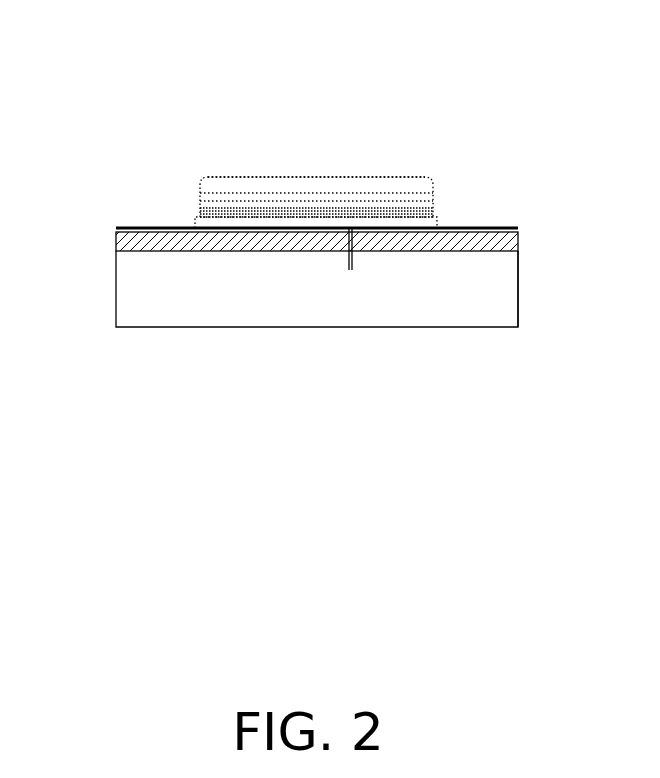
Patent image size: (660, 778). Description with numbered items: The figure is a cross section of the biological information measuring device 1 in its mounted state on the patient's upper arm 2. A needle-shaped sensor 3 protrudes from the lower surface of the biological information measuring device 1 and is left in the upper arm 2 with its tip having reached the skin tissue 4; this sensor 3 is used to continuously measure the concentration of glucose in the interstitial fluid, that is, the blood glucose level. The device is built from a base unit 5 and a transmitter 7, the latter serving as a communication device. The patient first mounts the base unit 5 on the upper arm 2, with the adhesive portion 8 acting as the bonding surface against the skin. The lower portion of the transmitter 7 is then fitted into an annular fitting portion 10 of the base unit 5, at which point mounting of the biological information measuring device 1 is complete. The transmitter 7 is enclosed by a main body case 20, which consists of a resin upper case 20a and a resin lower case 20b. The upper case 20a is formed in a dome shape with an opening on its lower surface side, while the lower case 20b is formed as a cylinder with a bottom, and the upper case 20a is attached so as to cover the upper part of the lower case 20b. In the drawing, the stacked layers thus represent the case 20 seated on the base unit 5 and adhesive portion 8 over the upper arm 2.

The biological information measuring device 1 is at (380, 163).
The upper arm 2 is at (307, 305).
The sensor 3 is at (352, 255).
The skin tissue 4 is at (519, 281).
The base unit 5 is at (193, 222).
The transmitter 7 is at (276, 177).
The adhesive portion 8 is at (228, 225).
The annular fitting portion 10 is at (193, 213).
The main body case 20 is at (228, 177).
The upper case 20a is at (203, 181).
The lower case 20b is at (197, 203).